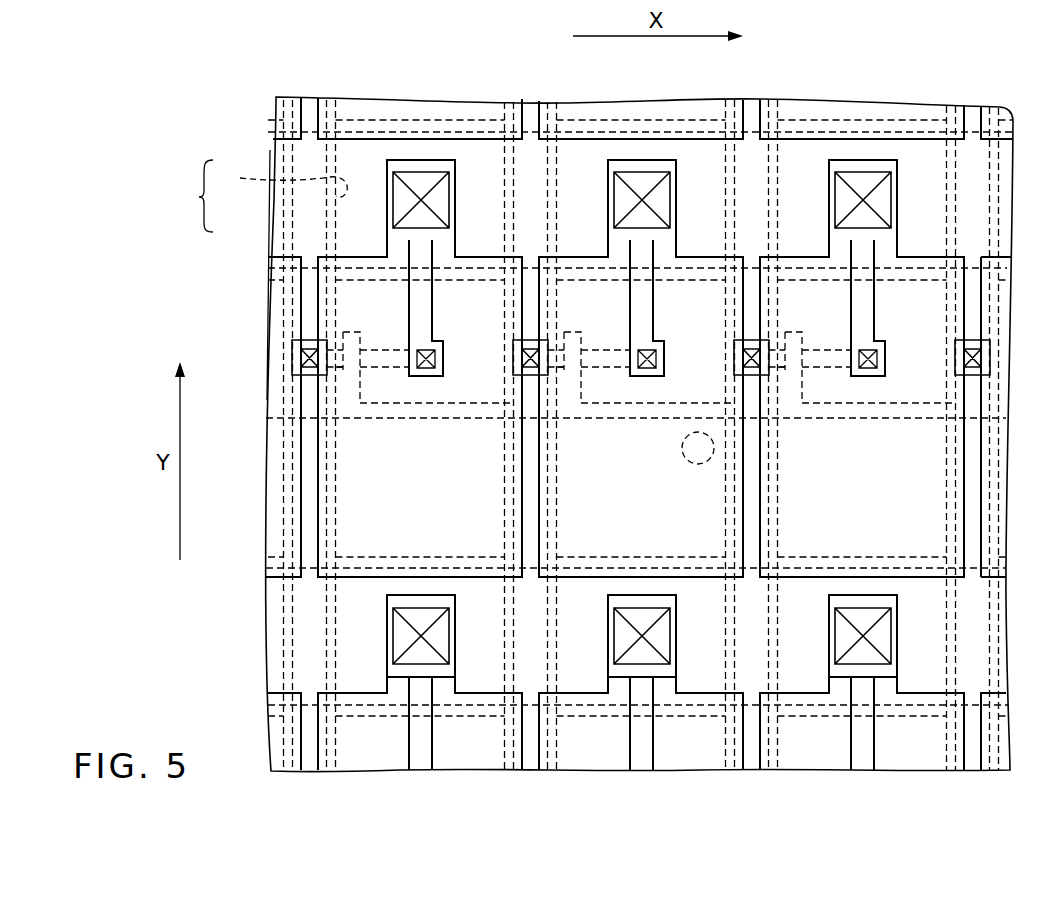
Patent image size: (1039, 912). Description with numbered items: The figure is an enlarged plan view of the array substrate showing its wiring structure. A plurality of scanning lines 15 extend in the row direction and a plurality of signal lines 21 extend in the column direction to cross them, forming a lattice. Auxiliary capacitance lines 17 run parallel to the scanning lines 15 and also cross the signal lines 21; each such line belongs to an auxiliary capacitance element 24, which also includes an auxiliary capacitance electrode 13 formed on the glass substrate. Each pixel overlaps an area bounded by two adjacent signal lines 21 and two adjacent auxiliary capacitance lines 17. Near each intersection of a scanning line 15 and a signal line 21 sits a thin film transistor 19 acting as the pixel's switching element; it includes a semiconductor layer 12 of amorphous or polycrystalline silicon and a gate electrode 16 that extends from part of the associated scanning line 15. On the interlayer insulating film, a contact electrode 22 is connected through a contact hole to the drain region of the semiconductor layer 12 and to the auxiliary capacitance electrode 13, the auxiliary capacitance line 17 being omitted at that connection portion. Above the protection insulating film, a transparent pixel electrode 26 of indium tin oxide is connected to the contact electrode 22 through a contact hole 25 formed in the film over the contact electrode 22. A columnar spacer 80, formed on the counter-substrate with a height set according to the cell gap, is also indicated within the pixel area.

The semiconductor layer 12 is at (334, 375).
The auxiliary capacitance electrode 13 is at (604, 118).
The scanning line 15 is at (292, 418).
The gate electrode 16 is at (345, 328).
The auxiliary capacitance line 17 is at (270, 220).
The thin film transistor 19 is at (368, 378).
The signal line 21 is at (323, 107).
The contact electrode 22 is at (433, 319).
The auxiliary capacitance element 24 is at (190, 196).
The contact hole 25 is at (445, 200).
The pixel electrode 26 is at (300, 506).
The columnar spacer 80 is at (686, 462).